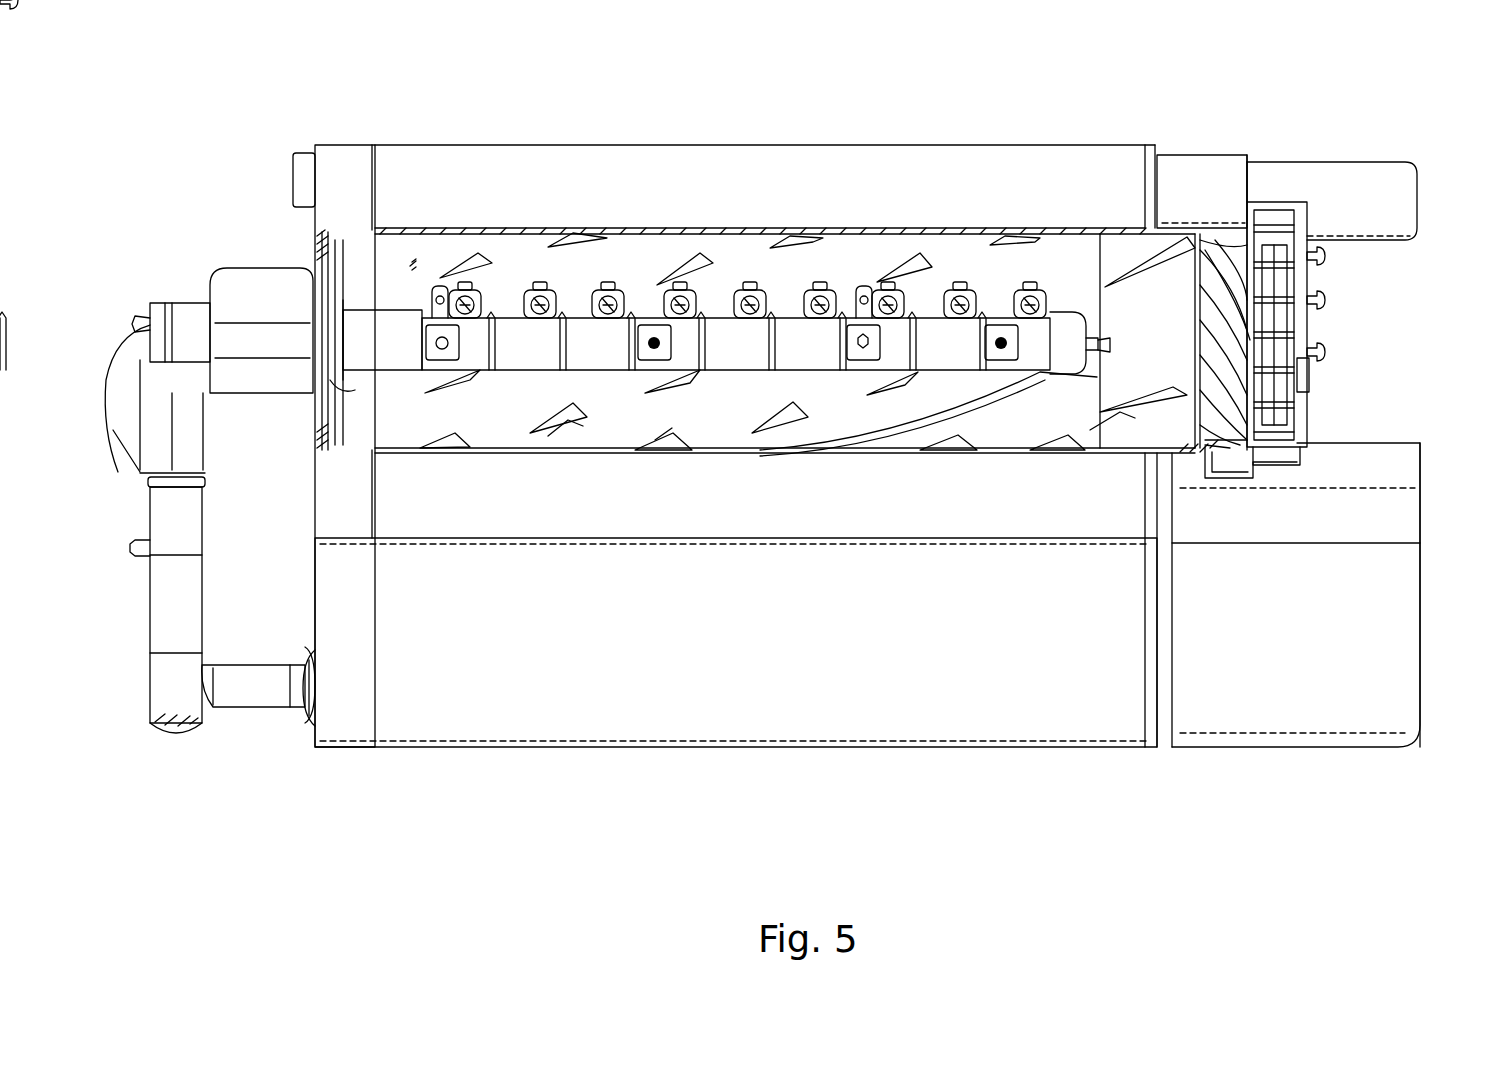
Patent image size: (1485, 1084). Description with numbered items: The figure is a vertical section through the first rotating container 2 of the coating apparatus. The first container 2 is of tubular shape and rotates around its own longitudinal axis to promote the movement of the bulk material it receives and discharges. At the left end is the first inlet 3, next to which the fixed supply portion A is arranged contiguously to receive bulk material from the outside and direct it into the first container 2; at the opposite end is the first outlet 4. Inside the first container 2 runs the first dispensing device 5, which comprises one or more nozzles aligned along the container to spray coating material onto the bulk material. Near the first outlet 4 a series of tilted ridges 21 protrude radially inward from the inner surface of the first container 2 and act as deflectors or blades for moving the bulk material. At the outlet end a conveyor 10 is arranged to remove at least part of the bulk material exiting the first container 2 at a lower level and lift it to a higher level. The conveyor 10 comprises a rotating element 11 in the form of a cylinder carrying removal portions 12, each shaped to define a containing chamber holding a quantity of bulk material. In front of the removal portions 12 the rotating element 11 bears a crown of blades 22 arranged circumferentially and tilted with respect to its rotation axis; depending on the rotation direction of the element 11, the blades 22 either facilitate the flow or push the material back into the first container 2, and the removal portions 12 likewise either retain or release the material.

The supply portion A is at (341, 162).
The first container 2 is at (865, 248).
The first inlet 3 is at (388, 272).
The first outlet 4 is at (1260, 403).
The first dispensing device 5 is at (727, 450).
The conveyor 10 is at (1223, 202).
The rotating element 11 is at (1270, 240).
The removal portion 12 is at (1298, 308).
The tilted ridges 21 is at (663, 450).
The blades 22 is at (1330, 355).